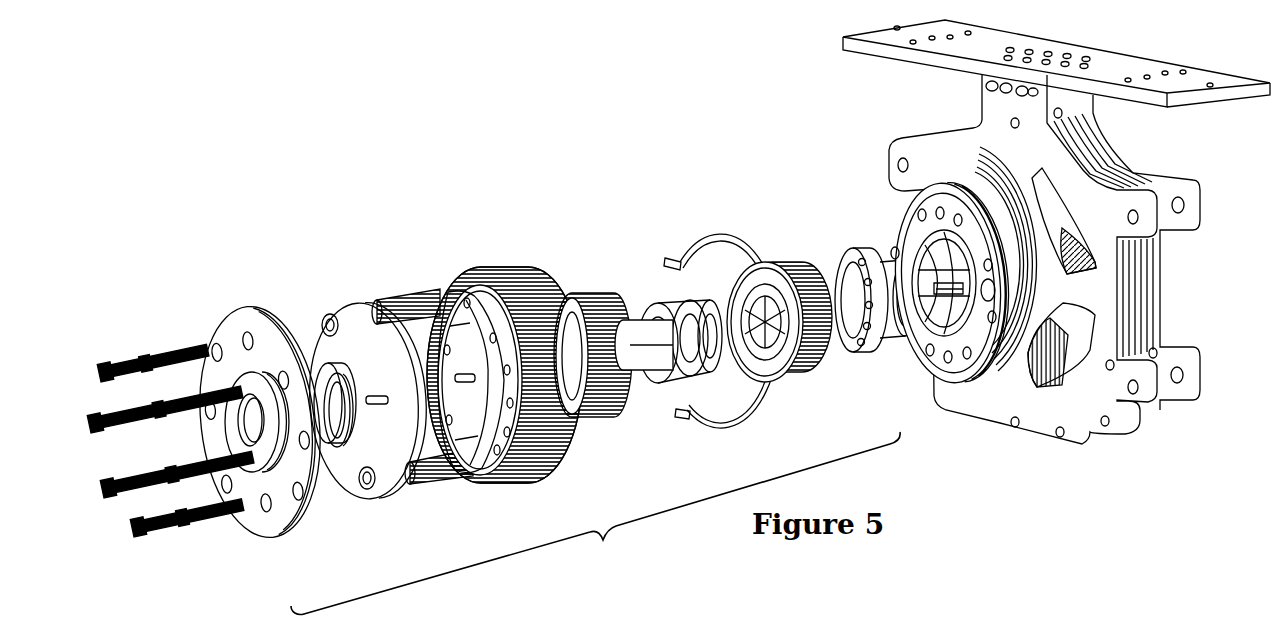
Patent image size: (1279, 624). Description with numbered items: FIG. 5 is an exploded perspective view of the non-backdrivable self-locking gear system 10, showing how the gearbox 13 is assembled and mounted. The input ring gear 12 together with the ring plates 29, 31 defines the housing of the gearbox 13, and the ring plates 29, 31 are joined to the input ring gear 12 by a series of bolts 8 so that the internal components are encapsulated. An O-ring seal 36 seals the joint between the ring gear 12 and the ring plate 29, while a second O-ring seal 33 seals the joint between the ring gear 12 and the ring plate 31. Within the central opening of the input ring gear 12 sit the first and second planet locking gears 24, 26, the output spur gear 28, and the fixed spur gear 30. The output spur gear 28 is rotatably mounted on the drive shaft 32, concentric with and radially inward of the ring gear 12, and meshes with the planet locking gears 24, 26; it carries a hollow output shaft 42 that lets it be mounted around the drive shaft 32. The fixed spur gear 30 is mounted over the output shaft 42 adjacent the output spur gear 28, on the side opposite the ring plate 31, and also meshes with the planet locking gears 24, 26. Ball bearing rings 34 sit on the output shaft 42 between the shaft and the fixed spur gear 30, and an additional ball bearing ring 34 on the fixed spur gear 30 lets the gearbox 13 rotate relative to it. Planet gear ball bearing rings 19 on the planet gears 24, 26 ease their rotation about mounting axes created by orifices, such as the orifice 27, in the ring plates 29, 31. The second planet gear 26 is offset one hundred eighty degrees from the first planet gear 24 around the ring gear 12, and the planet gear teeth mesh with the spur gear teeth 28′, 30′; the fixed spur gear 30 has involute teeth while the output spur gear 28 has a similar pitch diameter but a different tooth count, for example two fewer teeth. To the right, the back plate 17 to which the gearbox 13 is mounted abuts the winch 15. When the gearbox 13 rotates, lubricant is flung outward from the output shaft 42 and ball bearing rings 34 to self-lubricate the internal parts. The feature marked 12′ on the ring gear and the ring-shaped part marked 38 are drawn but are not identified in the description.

The bolts 8 is at (170, 446).
The output ring gear system 10 is at (509, 77).
The input ring gear 12 is at (504, 398).
The housing outer surface 12′ is at (504, 339).
The gearbox 13 is at (595, 523).
The winch 15 is at (1056, 93).
The back plate 17 is at (1027, 286).
The planet gear ball bearing rings 19 is at (343, 401).
The first planet locking gear 24 is at (406, 277).
The second planet locking gear 26 is at (439, 495).
The orifice 27 is at (957, 369).
The output spur gear 28 is at (593, 319).
The gear teeth 28′ is at (588, 394).
The ring plate 29 is at (944, 286).
The fixed spur gear 30 is at (787, 281).
The gear teeth 30′ is at (771, 353).
The ring plate 31 is at (259, 400).
The drive shaft 32 is at (914, 243).
The second O-ring seal 33 is at (367, 369).
The ball bearing rings 34 is at (610, 318).
The O-ring seal 36 is at (747, 342).
The snap ring 38 is at (721, 300).
The output shaft 42 is at (638, 314).